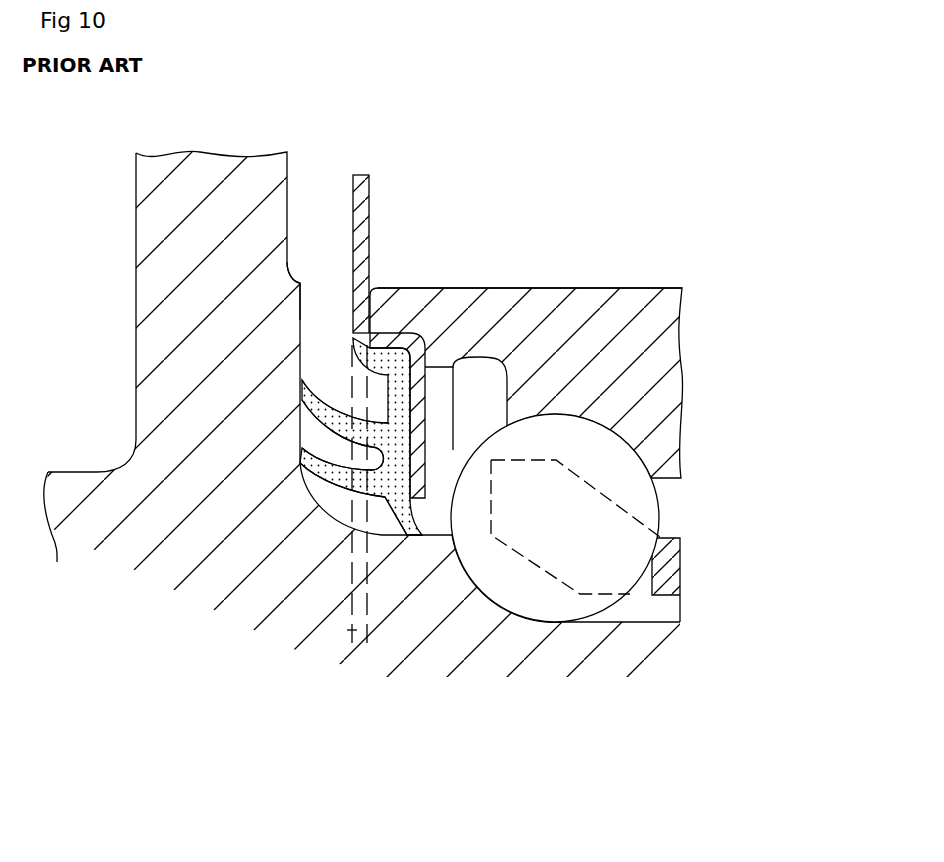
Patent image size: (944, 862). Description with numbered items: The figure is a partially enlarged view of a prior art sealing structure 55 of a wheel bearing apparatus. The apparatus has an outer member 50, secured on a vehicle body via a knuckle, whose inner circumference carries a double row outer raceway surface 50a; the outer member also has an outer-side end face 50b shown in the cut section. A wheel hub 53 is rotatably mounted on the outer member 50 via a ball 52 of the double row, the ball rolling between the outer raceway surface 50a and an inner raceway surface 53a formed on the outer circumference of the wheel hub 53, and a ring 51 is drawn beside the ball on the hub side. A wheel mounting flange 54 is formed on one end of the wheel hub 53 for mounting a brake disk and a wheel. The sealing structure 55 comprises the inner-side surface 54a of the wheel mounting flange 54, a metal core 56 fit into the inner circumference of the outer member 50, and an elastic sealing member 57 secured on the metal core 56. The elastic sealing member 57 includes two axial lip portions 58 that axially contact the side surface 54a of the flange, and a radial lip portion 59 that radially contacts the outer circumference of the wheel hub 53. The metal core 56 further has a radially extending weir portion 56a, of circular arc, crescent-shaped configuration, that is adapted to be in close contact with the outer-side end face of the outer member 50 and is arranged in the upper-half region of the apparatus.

The outer member 50 is at (637, 363).
The outer raceway surface 50a is at (595, 456).
The housing end face 50b is at (500, 287).
The retainer ring 51 is at (653, 575).
The ball 52 is at (625, 503).
The wheel hub 53 is at (93, 498).
The inner raceway surface 53a is at (493, 597).
The wheel mounting flange 54 is at (217, 200).
The inner-side surface of the wheel mounting flange 54a is at (300, 303).
The sealing structure 55 is at (333, 335).
The metal core 56 is at (349, 428).
The weir portion 56a is at (365, 212).
The elastic sealing member 57 is at (402, 489).
The axial lip portion 58 is at (301, 465).
The radial lip portion 59 is at (403, 537).